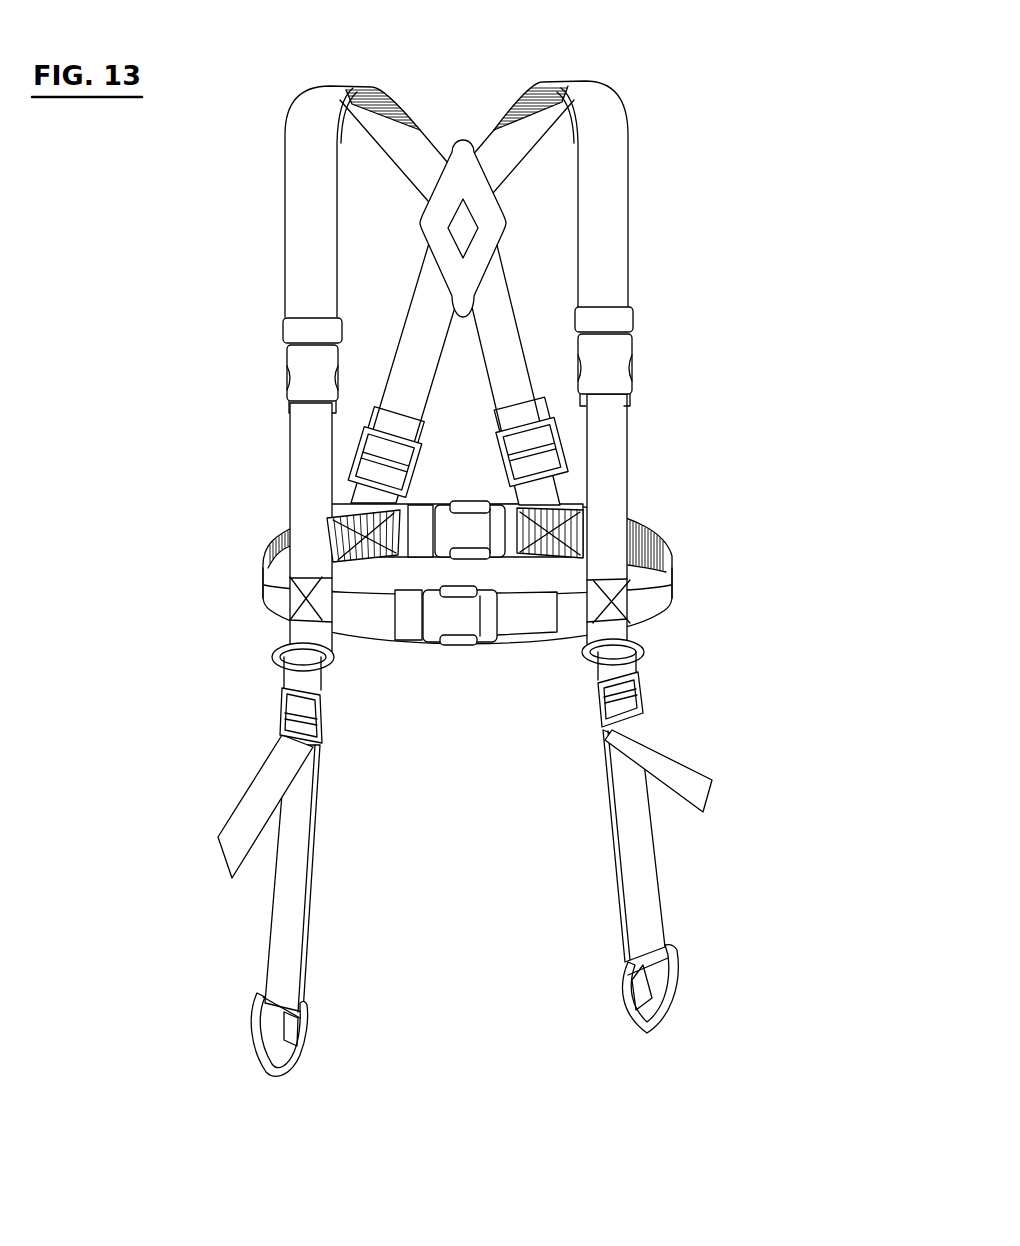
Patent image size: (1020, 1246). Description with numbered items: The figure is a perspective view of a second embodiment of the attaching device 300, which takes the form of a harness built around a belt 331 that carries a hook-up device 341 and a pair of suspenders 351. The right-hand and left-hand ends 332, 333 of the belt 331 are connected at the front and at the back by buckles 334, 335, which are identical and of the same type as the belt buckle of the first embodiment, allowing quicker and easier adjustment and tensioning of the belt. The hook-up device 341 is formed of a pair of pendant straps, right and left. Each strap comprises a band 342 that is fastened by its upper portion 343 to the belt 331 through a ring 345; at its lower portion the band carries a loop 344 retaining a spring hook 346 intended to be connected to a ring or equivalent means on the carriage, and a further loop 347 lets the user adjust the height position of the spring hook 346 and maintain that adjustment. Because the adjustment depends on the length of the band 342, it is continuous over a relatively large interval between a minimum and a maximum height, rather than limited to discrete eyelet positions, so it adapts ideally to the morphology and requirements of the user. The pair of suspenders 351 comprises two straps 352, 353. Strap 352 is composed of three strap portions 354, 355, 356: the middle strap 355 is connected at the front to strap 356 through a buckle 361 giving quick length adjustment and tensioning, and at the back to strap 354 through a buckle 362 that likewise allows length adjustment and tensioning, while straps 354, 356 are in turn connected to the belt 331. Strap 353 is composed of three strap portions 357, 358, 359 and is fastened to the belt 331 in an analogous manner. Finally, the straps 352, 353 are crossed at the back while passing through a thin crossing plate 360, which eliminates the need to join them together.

The attaching device 300 is at (236, 240).
The belt 331 is at (245, 569).
The right-hand end of belt 332 is at (275, 589).
The left-hand end of belt 333 is at (660, 579).
The buckle 334 is at (443, 622).
The buckle 335 is at (455, 530).
The hook-up device 341 is at (343, 965).
The band 342 is at (286, 890).
The upper portion of band 343 is at (297, 680).
The loop 344 is at (298, 1040).
The ring 345 is at (283, 650).
The spring hook 346 is at (258, 1012).
The loop 347 is at (300, 703).
The pair of suspenders 351 is at (433, 106).
The strap 352 is at (305, 120).
The strap 353 is at (598, 112).
The strap portion 354 is at (555, 496).
The middle strap 355 is at (513, 313).
The strap portion 356 is at (300, 522).
The strap portion 357 is at (352, 497).
The strap portion 358 is at (428, 305).
The strap portion 359 is at (612, 513).
The crossing plate 360 is at (497, 232).
The buckle 361 is at (310, 362).
The buckle 362 is at (357, 445).